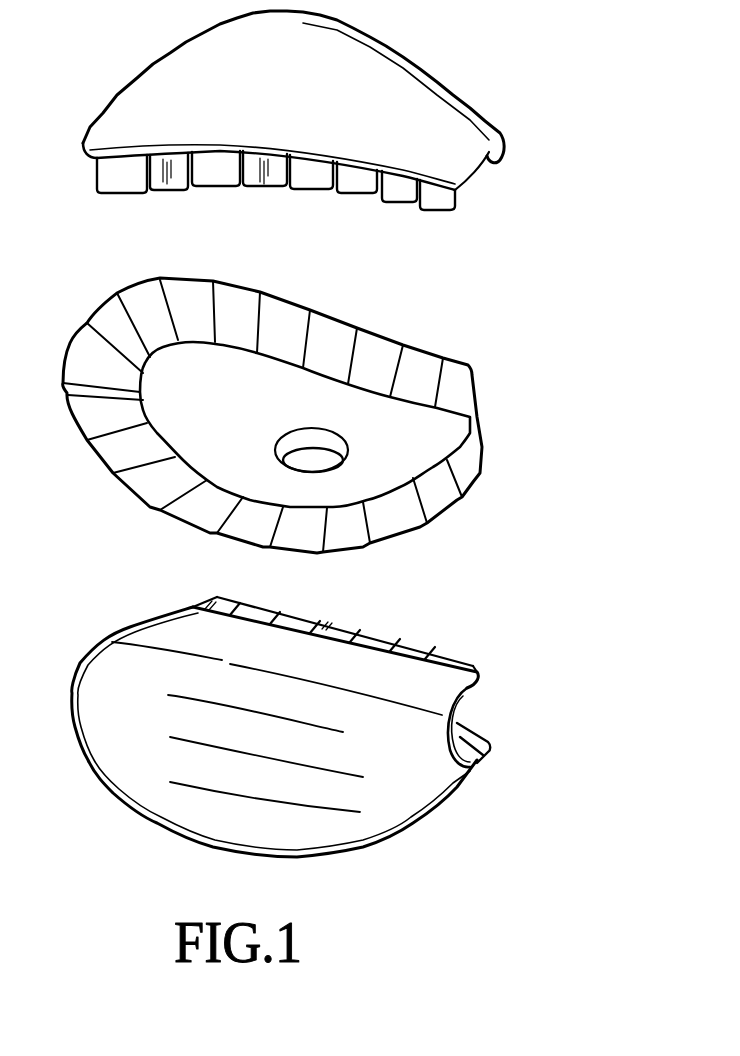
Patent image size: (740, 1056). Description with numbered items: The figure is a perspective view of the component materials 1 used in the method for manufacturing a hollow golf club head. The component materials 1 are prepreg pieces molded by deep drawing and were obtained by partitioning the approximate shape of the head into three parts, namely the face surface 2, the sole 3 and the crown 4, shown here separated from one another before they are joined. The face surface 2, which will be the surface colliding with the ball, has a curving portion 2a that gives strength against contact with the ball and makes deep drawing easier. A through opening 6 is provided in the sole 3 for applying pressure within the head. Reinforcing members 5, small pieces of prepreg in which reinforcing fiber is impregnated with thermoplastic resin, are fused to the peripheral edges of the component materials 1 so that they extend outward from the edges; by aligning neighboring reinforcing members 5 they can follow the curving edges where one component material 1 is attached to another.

The component material 1 is at (493, 652).
The face surface 2 is at (108, 757).
The curving portion 2a is at (155, 630).
The sole 3 is at (433, 440).
The crown 4 is at (440, 113).
The reinforcing member 5 is at (128, 180).
The through opening 6 is at (313, 467).